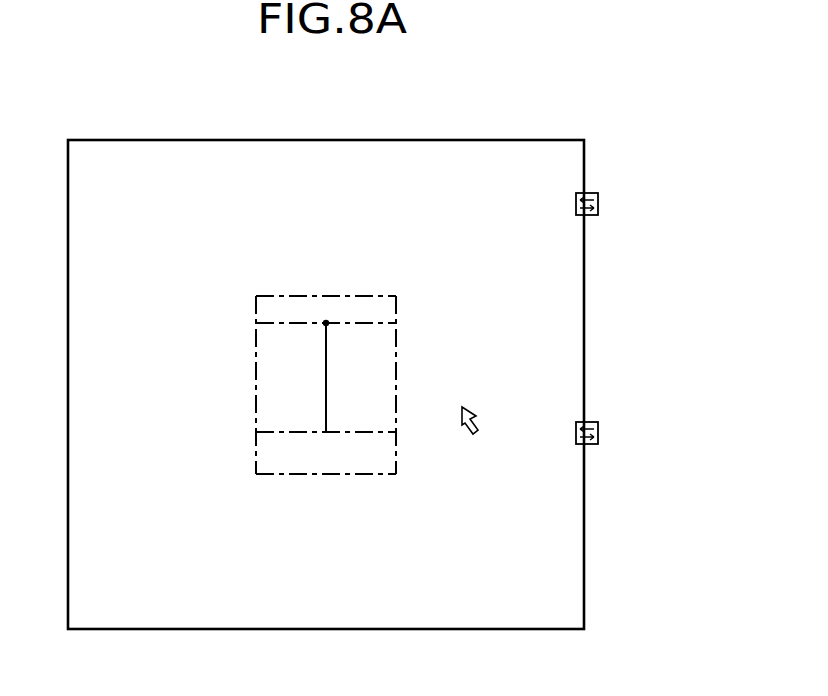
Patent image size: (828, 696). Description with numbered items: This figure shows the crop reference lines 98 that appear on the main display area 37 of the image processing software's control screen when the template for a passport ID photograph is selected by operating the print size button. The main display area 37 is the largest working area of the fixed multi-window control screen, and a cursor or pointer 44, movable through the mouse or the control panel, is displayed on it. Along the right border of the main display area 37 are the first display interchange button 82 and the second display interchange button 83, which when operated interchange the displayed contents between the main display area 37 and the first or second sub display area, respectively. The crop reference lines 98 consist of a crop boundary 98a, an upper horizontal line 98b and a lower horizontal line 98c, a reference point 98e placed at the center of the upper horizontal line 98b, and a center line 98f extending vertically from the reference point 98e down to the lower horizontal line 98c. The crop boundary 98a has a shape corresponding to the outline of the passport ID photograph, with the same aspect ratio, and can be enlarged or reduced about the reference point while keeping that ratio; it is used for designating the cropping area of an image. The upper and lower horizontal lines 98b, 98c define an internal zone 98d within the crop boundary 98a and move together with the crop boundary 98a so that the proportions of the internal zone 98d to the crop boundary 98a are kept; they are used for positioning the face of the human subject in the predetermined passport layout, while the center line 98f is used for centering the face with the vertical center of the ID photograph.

The main display area 37 is at (386, 140).
The pointer 44 is at (472, 409).
The first display interchange button 82 is at (599, 203).
The second display interchange button 83 is at (599, 432).
The crop reference lines 98 is at (378, 290).
The crop boundary 98a is at (397, 369).
The upper horizontal line 98b is at (291, 322).
The lower horizontal line 98c is at (367, 433).
The internal zone 98d is at (300, 430).
The reference point 98e is at (325, 322).
The center line 98f is at (325, 375).